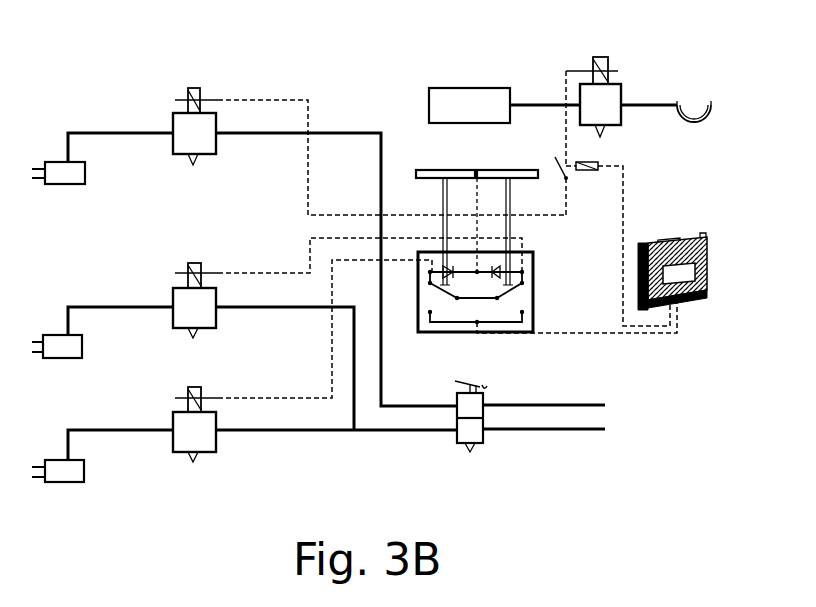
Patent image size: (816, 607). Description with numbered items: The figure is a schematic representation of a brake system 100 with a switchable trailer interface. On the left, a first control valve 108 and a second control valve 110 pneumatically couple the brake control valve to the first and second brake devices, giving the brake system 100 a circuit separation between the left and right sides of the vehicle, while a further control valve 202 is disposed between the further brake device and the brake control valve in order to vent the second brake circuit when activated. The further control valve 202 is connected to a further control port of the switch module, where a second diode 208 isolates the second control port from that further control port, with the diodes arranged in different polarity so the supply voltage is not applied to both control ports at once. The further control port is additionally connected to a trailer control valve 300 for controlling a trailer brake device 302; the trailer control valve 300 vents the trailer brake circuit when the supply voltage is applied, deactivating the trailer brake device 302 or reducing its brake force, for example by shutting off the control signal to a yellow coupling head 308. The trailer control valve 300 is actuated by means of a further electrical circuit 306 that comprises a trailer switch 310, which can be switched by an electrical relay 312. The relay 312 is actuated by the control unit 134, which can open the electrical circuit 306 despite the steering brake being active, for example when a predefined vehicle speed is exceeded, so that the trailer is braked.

The brake system 100 is at (122, 56).
The further control valve 202 is at (216, 143).
The second control valve 110 is at (216, 317).
The first control valve 108 is at (216, 443).
The trailer brake device 302 is at (473, 88).
The trailer control valve 300 is at (622, 93).
The yellow coupling head 308 is at (697, 122).
The electrical circuit 306 is at (565, 200).
The trailer switch 310 is at (555, 172).
The relay 312 is at (591, 163).
The second diode 208 is at (478, 270).
The control unit 134 is at (708, 262).